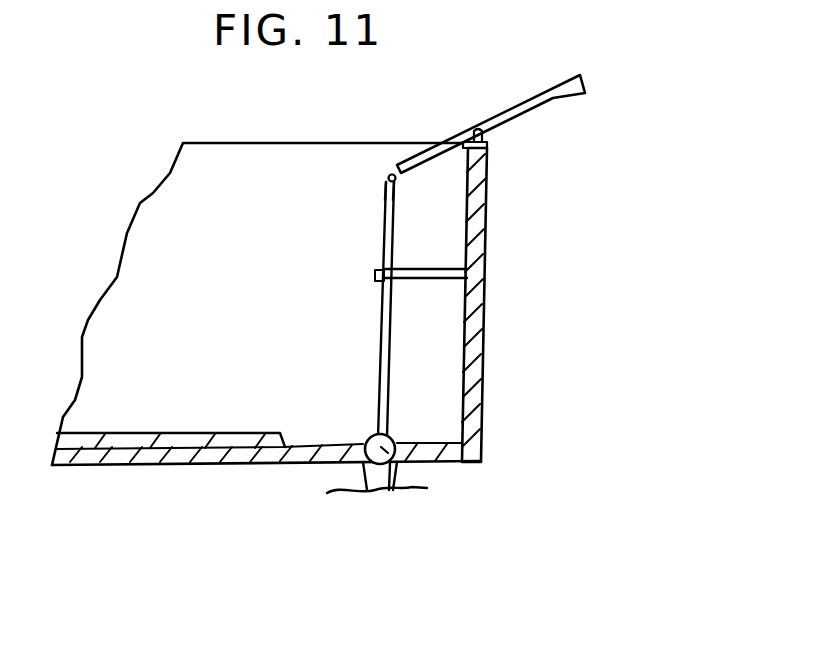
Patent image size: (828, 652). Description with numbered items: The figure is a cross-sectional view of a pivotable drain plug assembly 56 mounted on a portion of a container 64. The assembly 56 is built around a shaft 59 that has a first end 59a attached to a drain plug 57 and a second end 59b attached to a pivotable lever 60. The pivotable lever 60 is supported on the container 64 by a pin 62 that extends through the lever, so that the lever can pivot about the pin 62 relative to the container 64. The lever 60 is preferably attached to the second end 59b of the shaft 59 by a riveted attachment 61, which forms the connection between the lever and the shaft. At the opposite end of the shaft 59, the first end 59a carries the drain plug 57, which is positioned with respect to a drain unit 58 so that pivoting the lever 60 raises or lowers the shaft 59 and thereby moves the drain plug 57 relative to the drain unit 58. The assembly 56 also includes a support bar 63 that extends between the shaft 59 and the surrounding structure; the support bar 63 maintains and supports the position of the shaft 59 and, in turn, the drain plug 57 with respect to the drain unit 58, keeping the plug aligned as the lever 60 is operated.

The pivotable drain plug assembly 56 is at (622, 66).
The drain plug 57 is at (397, 458).
The drain unit 58 is at (357, 506).
The shaft 59 is at (378, 332).
The first end 59a is at (383, 435).
The second end 59b is at (388, 186).
The pivotable lever 60 is at (533, 111).
The riveted attachment 61 is at (387, 178).
The pin 62 is at (483, 139).
The support bar 63 is at (440, 280).
The container 64 is at (347, 143).